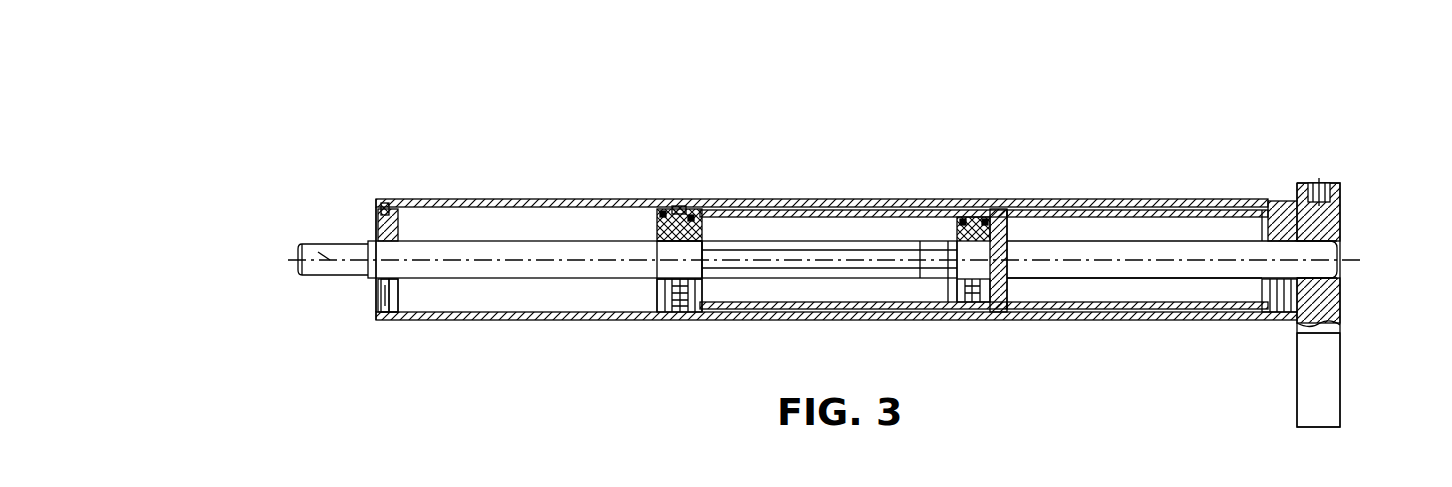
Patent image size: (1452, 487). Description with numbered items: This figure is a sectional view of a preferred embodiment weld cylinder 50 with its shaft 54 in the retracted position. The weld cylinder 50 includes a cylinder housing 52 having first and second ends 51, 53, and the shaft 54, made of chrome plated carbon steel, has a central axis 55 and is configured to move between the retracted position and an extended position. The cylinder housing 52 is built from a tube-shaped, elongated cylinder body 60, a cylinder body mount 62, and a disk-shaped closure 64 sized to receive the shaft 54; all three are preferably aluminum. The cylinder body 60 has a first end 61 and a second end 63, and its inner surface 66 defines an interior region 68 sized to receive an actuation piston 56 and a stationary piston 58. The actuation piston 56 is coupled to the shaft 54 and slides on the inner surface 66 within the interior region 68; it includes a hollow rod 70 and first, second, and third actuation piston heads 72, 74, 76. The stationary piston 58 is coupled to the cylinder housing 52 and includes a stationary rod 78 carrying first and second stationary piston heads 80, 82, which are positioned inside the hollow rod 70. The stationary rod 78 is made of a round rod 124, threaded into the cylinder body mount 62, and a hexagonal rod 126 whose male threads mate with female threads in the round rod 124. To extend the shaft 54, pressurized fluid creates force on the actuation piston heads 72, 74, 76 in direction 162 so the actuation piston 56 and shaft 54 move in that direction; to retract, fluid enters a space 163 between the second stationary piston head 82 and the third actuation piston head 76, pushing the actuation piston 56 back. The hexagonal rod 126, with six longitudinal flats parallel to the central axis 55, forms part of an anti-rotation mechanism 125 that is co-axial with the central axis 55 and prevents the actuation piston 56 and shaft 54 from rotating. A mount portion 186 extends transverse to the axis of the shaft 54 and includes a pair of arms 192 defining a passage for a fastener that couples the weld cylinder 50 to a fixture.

The weld cylinder 50 is at (985, 158).
The first end of cylinder housing 51 is at (375, 333).
The cylinder housing 52 is at (455, 335).
The second end of cylinder housing 53 is at (1324, 146).
The shaft 54 is at (323, 290).
The central axis 55 is at (303, 237).
The actuation piston 56 is at (650, 218).
The stationary piston 58 is at (1206, 236).
The cylinder body 60 is at (490, 198).
The first end of cylinder body 61 is at (383, 198).
The cylinder body mount 62 is at (1346, 177).
The second end of cylinder body 63 is at (1290, 188).
The closure 64 is at (366, 218).
The inner surface 66 is at (503, 306).
The interior region 68 is at (603, 227).
The hollow rod 70 is at (857, 207).
The first actuation piston head 72 is at (650, 297).
The second actuation piston head 74 is at (947, 289).
The third actuation piston head 76 is at (1251, 293).
The stationary rod 78 is at (1057, 232).
The first stationary piston head 80 is at (708, 230).
The second stationary piston head 82 is at (1019, 225).
The round rod 124 is at (1140, 281).
The anti-rotation mechanism 125 is at (948, 235).
The hexagonal rod 126 is at (748, 283).
The direction 162 is at (897, 114).
The space 163 is at (1043, 294).
The mount portion 186 is at (1352, 352).
The arms 192 is at (1352, 386).